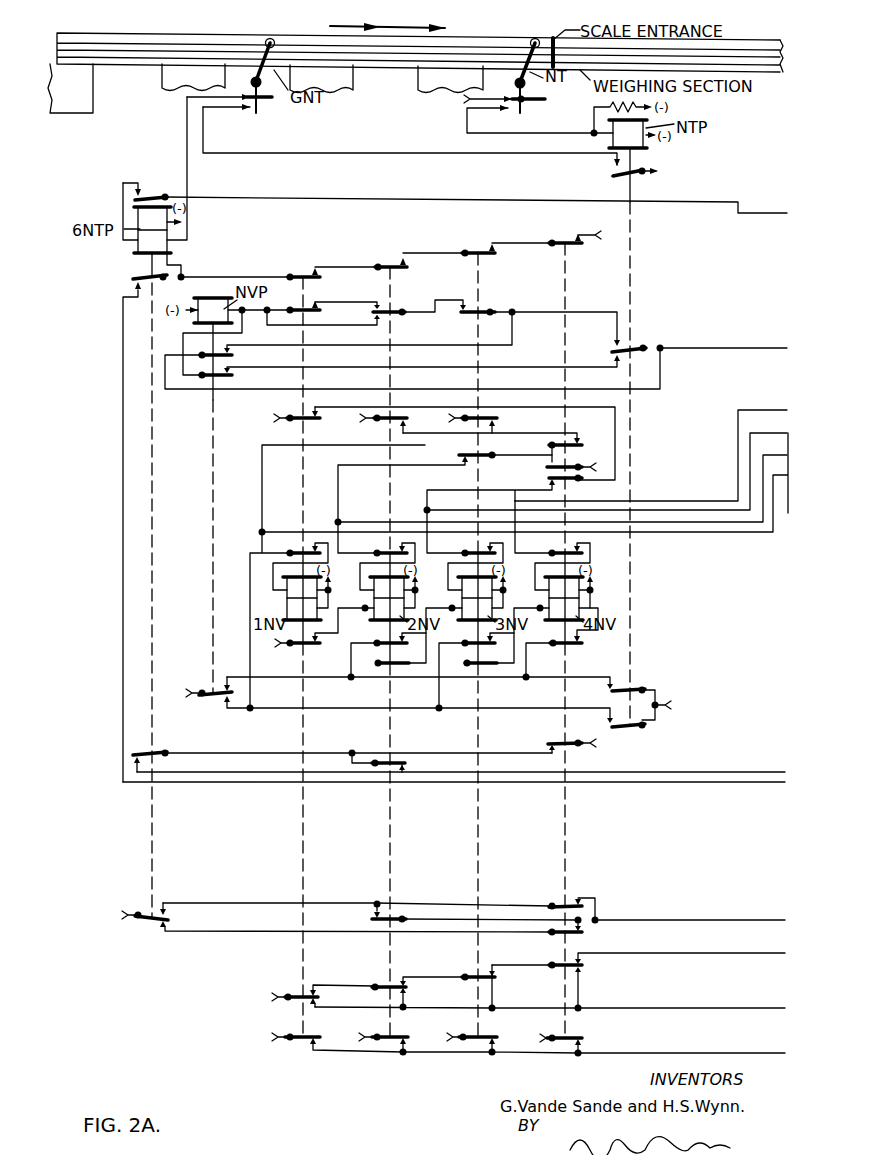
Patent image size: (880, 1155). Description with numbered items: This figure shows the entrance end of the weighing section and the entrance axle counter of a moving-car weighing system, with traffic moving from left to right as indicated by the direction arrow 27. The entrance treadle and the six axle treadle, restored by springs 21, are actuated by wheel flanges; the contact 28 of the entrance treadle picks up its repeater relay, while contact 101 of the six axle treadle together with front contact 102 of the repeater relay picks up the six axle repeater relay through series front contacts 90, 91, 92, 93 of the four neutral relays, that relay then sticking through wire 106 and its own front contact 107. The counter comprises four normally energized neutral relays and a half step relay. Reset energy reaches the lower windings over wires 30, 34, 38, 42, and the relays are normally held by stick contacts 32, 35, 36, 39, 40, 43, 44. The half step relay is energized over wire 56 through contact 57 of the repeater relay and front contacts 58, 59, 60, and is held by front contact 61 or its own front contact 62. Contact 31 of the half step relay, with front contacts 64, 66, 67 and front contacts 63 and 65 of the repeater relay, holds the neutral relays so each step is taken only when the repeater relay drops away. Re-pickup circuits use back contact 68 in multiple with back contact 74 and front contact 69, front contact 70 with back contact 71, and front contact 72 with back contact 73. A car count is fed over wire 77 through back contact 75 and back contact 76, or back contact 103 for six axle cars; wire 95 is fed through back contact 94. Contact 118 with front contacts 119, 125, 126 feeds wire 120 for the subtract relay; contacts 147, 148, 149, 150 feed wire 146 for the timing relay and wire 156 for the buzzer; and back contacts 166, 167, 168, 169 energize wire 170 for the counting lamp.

The direction arrow 27 is at (372, 27).
The springs 21 is at (268, 100).
The contact of treadle 6NT 101 is at (255, 114).
The contact of treadle NT 28 is at (527, 105).
The front contact of relay NTP 102 is at (440, 153).
The wire 106 is at (477, 203).
The front contact of relay 6NTP 107 is at (145, 194).
The back contact of relay 6NTP 94 is at (134, 278).
The front contact of relay 1NV 93 is at (333, 265).
The front contact of relay 2NV 92 is at (418, 253).
The front contact of relay 3NV 91 is at (503, 241).
The front contact of relay 4NV 90 is at (584, 232).
The front contact of relay 1NV 60 is at (322, 313).
The front contact of relay 2NV 59 is at (418, 301).
The front contact of relay 3NV 58 is at (538, 312).
The contact of relay NTP 57 is at (631, 349).
The wire 56 is at (476, 357).
The front contact of relay NTP 61 is at (356, 340).
The front contact of relay NVP 62 is at (222, 350).
The front contact of relay 1NV 72 is at (433, 443).
The back contact of relay 2NV 68 is at (457, 428).
The back contact of relay 3NV 74 is at (476, 423).
The front contact of relay 4NV 69 is at (579, 451).
The back contact of relay 3NV 71 is at (459, 455).
The front contact of relay 4NV 70 is at (548, 468).
The back contact of relay 4NV 73 is at (516, 493).
The wire 42 is at (651, 444).
The wire 38 is at (750, 441).
The wire 34 is at (763, 468).
The wire 30 is at (733, 534).
The front contact of relay 1NV 32 is at (293, 552).
The front contact of relay 2NV 64 is at (380, 552).
The front contact of relay 3NV 66 is at (468, 552).
The front contact of relay 4NV 67 is at (555, 552).
The front contact of relay 1NV 35 is at (315, 646).
The front contact of relay 2NV 36 is at (381, 648).
The front contact of relay 2NV 39 is at (414, 643).
The front contact of relay 3NV 40 is at (467, 645).
The front contact of relay 3NV 43 is at (502, 643).
The front contact of relay 4NV 44 is at (575, 645).
The front contact of relay NTP 65 is at (460, 691).
The front contact of relay NTP 63 is at (632, 728).
The contact of relay NVP 31 is at (212, 697).
The back contact of relay 4NV 75 is at (575, 736).
The back contact of relay 6NTP 76 is at (338, 750).
The back contact of relay 2NV 103 is at (398, 764).
The wire 77 is at (461, 762).
The wire 95 is at (454, 797).
The contact of relay 6NTP 118 is at (145, 921).
The front contact of relay 2NV 125 is at (372, 919).
The front contact of relay 4NV 126 is at (557, 903).
The front contact of relay 4NV 119 is at (582, 928).
The wire 120 is at (691, 910).
The wire 156 is at (683, 945).
The contact of relay 4NV 150 is at (553, 966).
The contact of relay 3NV 149 is at (470, 977).
The contact of relay 2NV 148 is at (403, 986).
The contact of relay 1NV 147 is at (301, 996).
The wire 146 is at (639, 999).
The back contact of relay 1NV 166 is at (300, 1042).
The back contact of relay 2NV 167 is at (390, 1042).
The back contact of relay 3NV 168 is at (478, 1042).
The back contact of relay 4NV 169 is at (566, 1042).
The wire 170 is at (683, 1043).